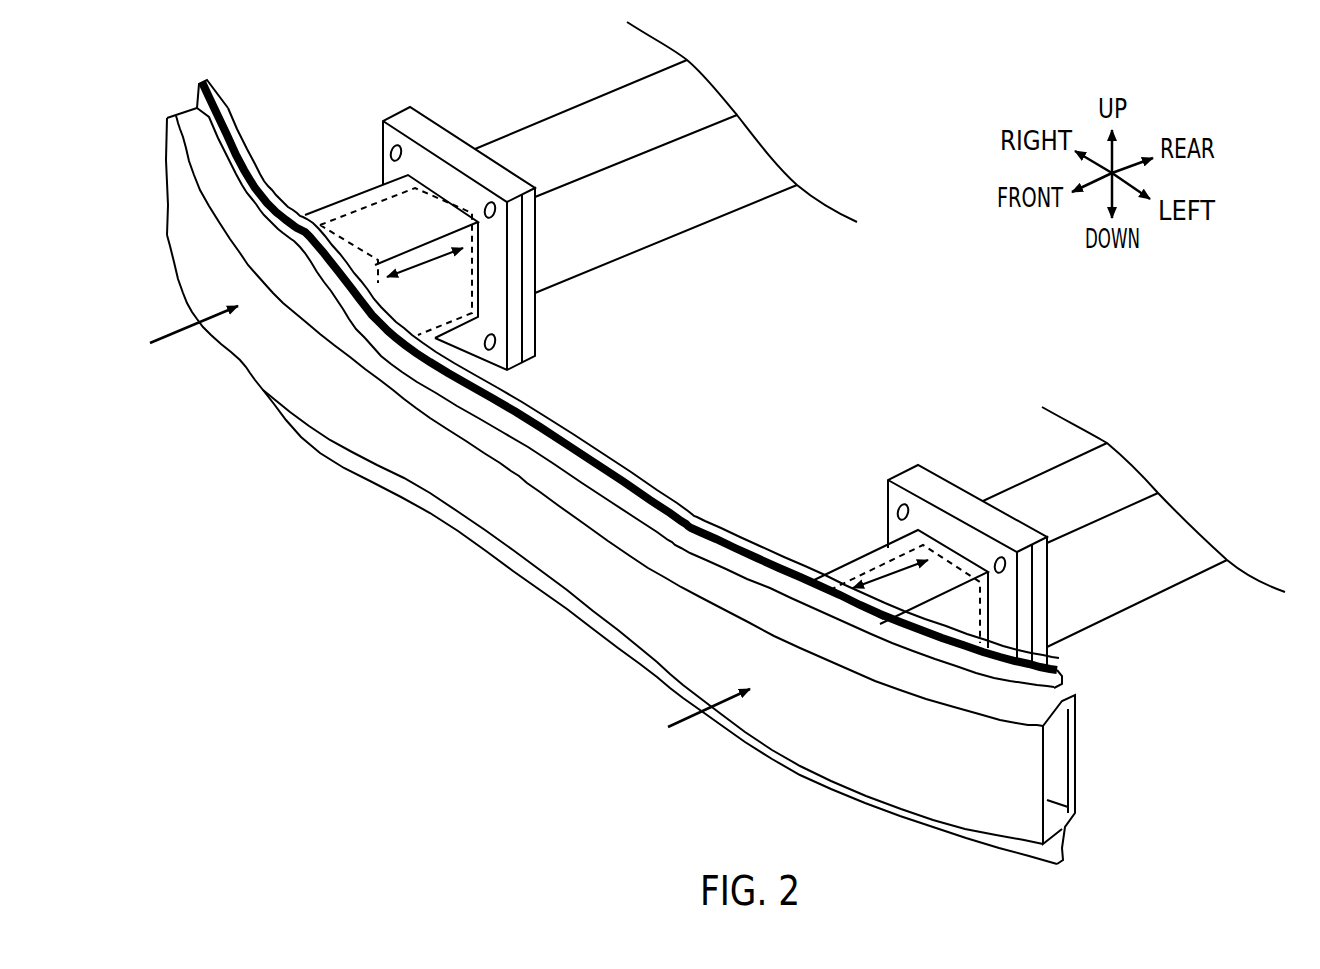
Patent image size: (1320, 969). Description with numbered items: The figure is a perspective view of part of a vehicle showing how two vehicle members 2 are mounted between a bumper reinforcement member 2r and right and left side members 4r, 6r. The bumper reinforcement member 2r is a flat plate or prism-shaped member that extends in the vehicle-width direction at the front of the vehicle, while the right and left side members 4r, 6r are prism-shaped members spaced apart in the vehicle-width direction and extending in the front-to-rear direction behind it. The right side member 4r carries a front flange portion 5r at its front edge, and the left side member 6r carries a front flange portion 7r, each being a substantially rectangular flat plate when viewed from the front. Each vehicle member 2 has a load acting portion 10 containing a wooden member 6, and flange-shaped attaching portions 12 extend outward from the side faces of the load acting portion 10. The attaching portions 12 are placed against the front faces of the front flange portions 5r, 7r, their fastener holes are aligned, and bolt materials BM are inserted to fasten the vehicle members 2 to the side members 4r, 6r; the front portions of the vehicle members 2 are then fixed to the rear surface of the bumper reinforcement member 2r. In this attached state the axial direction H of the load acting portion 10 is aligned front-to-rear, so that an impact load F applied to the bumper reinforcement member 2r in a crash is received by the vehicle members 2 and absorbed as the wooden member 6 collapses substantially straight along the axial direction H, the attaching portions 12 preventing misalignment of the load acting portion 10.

The vehicle member 2 is at (319, 206).
The bumper reinforcement member 2r is at (517, 523).
The right side member 4r is at (738, 182).
The front flange portion 5r is at (528, 353).
The wooden member 6 is at (440, 192).
The left side member 6r is at (1065, 477).
The front flange portion 7r is at (942, 488).
The load acting portion 10 is at (457, 285).
The attaching portion 12 is at (493, 250).
The bolt material BM is at (390, 153).
The axial direction of the load acting portion H is at (424, 264).
The impact load F is at (170, 336).